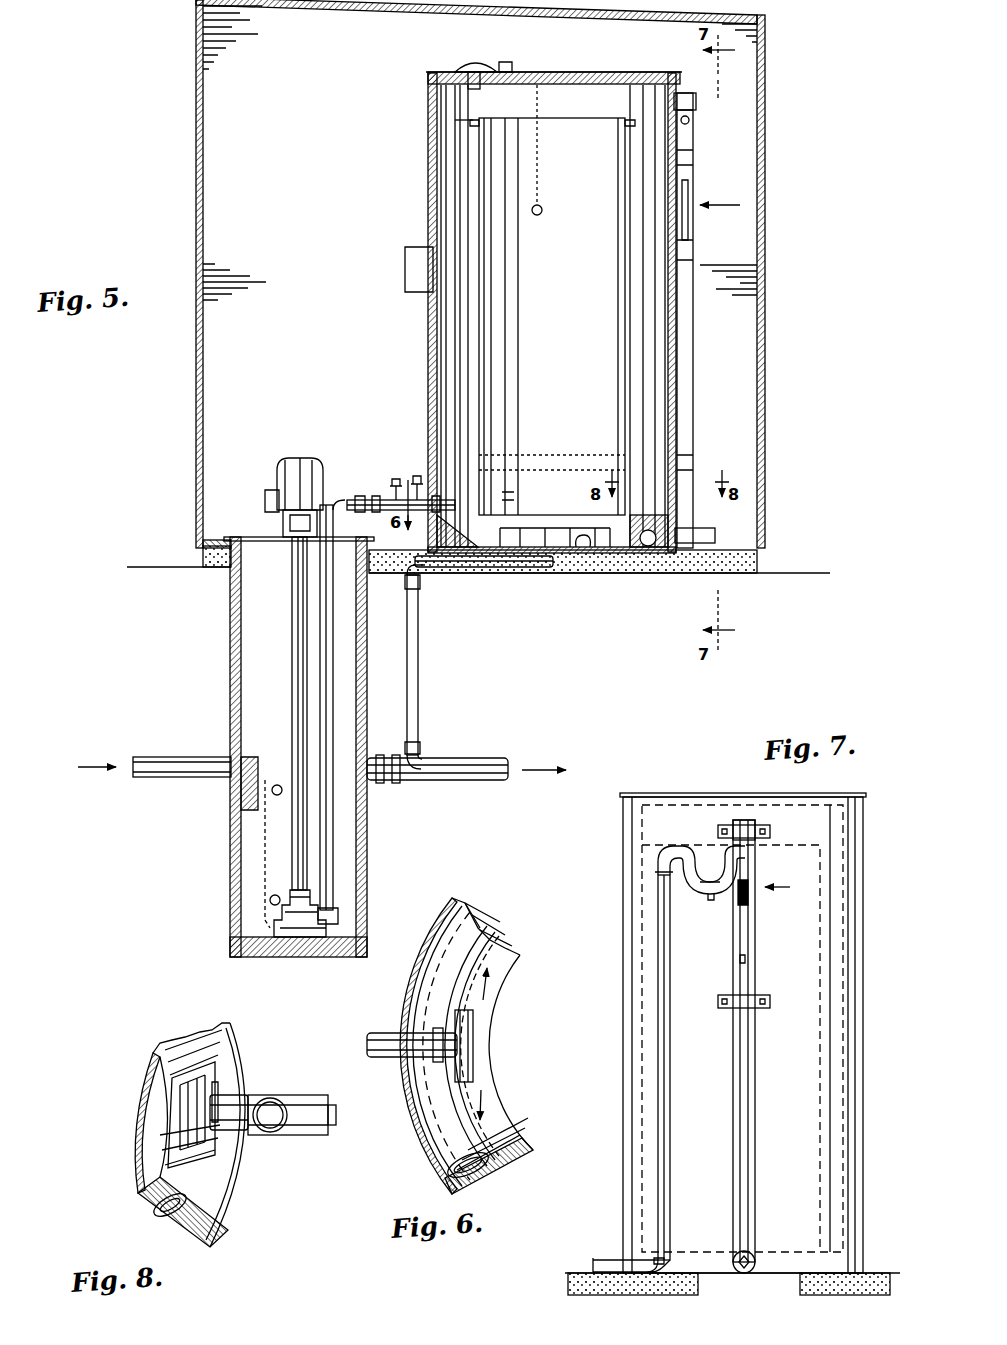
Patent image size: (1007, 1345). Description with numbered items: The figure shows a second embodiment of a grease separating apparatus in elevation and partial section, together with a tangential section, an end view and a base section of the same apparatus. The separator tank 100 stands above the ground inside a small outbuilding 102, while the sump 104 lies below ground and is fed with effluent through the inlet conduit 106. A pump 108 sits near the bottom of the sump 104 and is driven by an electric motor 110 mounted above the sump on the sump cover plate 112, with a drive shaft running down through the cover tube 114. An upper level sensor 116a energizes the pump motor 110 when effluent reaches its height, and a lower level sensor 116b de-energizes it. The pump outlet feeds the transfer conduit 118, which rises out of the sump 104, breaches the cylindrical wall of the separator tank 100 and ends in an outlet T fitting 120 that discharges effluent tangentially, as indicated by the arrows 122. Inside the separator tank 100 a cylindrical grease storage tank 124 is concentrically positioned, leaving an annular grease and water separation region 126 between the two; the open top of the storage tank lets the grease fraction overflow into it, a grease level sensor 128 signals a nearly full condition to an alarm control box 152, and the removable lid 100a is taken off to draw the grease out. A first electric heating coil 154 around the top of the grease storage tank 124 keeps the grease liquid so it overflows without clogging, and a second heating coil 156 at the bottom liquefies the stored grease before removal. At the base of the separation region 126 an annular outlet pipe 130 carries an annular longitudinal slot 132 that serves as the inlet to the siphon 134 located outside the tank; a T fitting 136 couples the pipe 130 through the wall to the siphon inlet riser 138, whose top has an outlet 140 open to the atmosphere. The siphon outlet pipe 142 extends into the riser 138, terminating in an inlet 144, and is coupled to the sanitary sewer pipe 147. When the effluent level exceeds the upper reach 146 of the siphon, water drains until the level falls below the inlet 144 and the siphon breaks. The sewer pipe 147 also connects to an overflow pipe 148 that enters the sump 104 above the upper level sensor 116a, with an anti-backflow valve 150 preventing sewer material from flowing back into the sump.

In FIG. 5, the separator tank 100 is at (429, 195).
In FIG. 7, the separator tank 100 is at (863, 905).
In FIG. 6, the separator tank 100 is at (400, 1003).
In FIG. 5, the removable lid 100a is at (565, 84).
In FIG. 7, the removable lid 100a is at (838, 800).
In FIG. 5, the outbuilding 102 is at (203, 82).
In FIG. 5, the sump 104 is at (230, 632).
In FIG. 5, the inlet conduit 106 is at (160, 768).
In FIG. 5, the pump 108 is at (300, 937).
In FIG. 5, the electric motor 110 is at (277, 472).
In FIG. 5, the sump cover plate 112 is at (248, 537).
In FIG. 5, the cover tube 114 is at (300, 605).
In FIG. 5, the upper level sensor 116a is at (271, 790).
In FIG. 5, the lower level sensor 116b is at (269, 900).
In FIG. 5, the transfer conduit 118 is at (333, 850).
In FIG. 5, the outlet T fitting 120 is at (400, 498).
In FIG. 6, the outlet T fitting 120 is at (473, 1030).
In FIG. 6, the arrows 122 is at (480, 995).
In FIG. 5, the grease storage tank 124 is at (484, 300).
In FIG. 5, the annular grease and water separation region 126 is at (452, 330).
In FIG. 7, the annular grease and water separation region 126 is at (840, 1000).
In FIG. 5, the grease level sensor 128 is at (543, 210).
In FIG. 5, the annular outlet pipe 130 is at (460, 567).
In FIG. 6, the annular outlet pipe 130 is at (488, 1172).
In FIG. 8, the annular outlet pipe 130 is at (155, 1212).
In FIG. 6, the annular longitudinal slot 132 is at (480, 928).
In FIG. 8, the annular longitudinal slot 132 is at (237, 1190).
In FIG. 5, the siphon 134 is at (740, 205).
In FIG. 7, the siphon 134 is at (790, 887).
In FIG. 8, the T fitting 136 is at (206, 1088).
In FIG. 5, the siphon inlet riser 138 is at (693, 400).
In FIG. 7, the siphon inlet riser 138 is at (781, 1115).
In FIG. 8, the siphon inlet riser 138 is at (290, 1095).
In FIG. 7, the outlet 140 is at (740, 822).
In FIG. 5, the siphon outlet pipe 142 is at (418, 663).
In FIG. 7, the siphon outlet pipe 142 is at (658, 925).
In FIG. 5, the inlet 144 is at (693, 245).
In FIG. 7, the inlet 144 is at (758, 965).
In FIG. 7, the upper reach 146 is at (690, 850).
In FIG. 5, the sanitary sewer pipe 147 is at (470, 758).
In FIG. 5, the overflow pipe 148 is at (380, 783).
In FIG. 5, the anti-backflow valve 150 is at (396, 783).
In FIG. 5, the alarm control box 152 is at (470, 58).
In FIG. 5, the first electric heating coil 154 is at (455, 120).
In FIG. 5, the second heating coil 156 is at (590, 555).